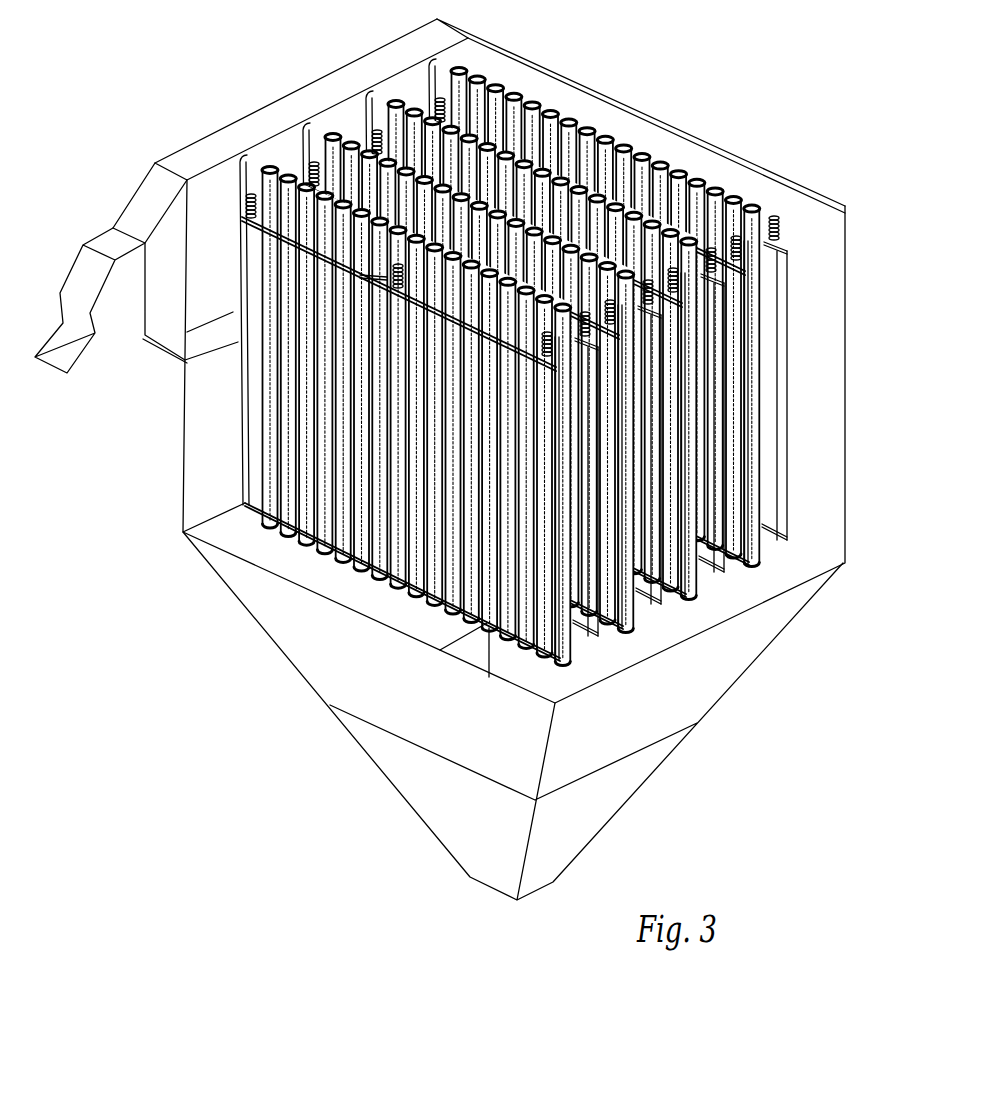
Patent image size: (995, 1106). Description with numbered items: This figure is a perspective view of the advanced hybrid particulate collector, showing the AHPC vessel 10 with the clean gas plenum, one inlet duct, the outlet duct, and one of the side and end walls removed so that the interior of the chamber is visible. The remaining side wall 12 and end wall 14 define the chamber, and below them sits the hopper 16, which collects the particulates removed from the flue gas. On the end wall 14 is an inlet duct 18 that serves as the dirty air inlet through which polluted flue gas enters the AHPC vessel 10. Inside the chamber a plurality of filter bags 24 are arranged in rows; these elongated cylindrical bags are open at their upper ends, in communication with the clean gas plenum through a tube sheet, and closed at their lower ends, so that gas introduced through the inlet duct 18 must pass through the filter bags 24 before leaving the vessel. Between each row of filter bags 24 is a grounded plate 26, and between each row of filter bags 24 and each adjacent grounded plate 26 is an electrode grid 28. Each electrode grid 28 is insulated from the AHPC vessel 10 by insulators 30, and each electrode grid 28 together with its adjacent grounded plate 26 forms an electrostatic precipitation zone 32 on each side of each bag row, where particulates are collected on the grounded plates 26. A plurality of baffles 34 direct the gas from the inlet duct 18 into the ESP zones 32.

The AHPC vessel 10 is at (128, 389).
The side wall 12 is at (827, 432).
The end wall 14 is at (190, 404).
The hopper 16 is at (308, 653).
The inlet duct 18 is at (83, 275).
The filter bag 24 is at (538, 112).
The grounded plate 26 is at (521, 116).
The electrode grid 28 is at (243, 473).
The insulator 30 is at (244, 207).
The electrostatic precipitation (ESP) zone 32 is at (601, 155).
The baffle 34 is at (241, 158).